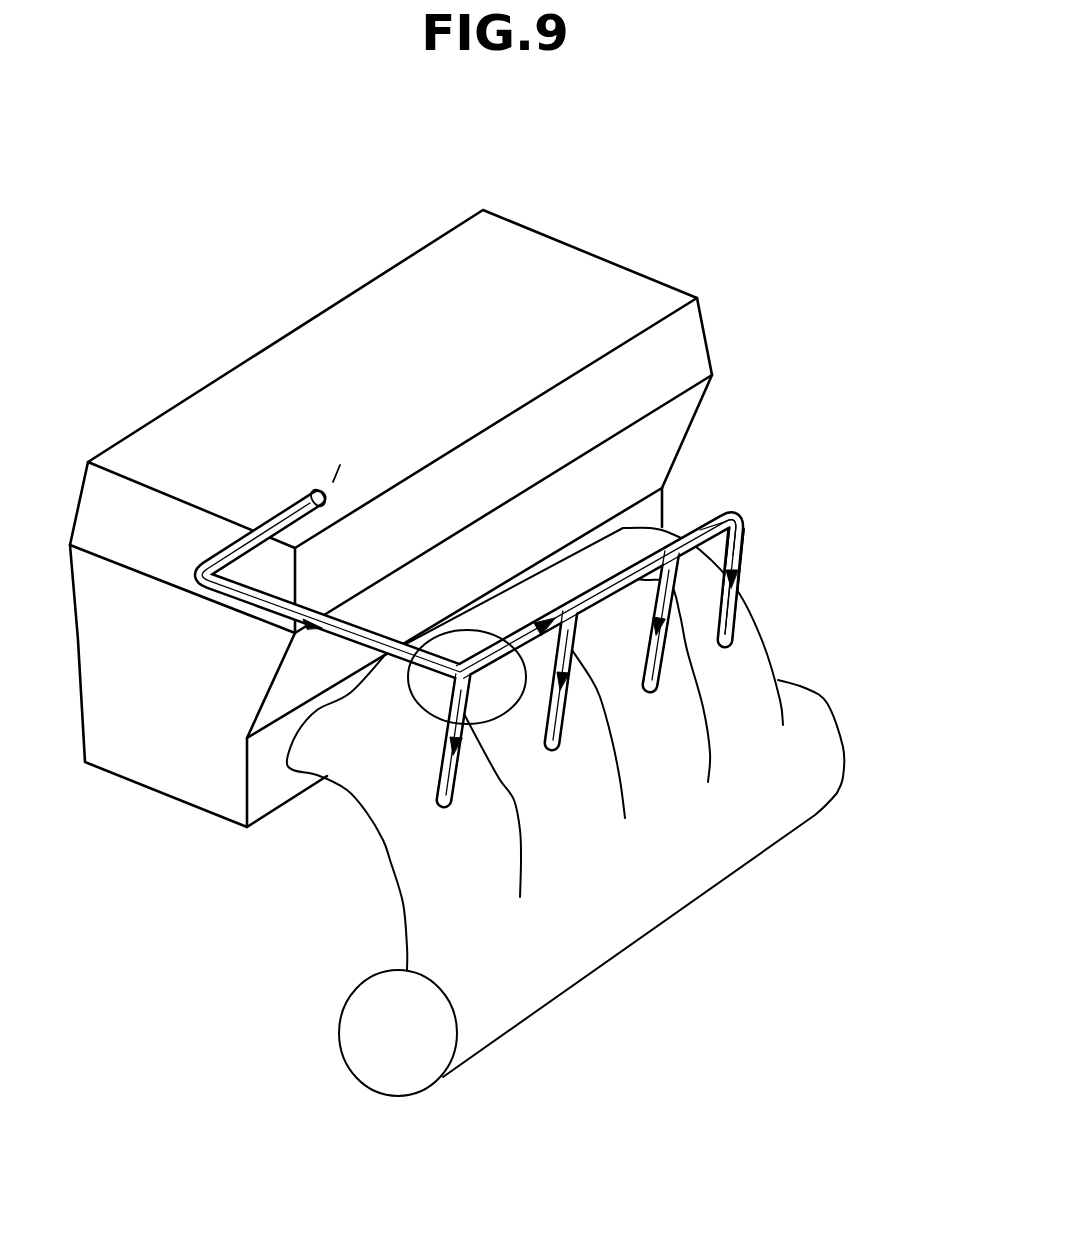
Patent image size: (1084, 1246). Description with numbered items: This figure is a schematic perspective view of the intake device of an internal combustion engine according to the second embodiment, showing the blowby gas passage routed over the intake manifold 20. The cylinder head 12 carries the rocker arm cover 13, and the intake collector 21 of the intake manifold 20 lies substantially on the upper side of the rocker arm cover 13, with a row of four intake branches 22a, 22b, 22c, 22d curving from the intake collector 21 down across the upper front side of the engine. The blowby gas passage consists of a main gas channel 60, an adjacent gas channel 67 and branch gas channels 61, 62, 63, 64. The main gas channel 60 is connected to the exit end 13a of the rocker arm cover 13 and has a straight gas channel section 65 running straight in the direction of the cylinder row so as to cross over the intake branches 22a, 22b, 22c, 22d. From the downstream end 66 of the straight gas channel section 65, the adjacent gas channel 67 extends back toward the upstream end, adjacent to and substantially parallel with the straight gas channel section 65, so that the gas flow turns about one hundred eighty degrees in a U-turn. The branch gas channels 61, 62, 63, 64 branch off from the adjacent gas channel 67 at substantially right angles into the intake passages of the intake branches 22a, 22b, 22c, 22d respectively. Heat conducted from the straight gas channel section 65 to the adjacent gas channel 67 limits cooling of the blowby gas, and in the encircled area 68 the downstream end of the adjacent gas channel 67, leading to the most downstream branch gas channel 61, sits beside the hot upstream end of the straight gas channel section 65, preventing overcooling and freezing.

The cylinder head 12 is at (158, 763).
The rocker arm cover 13 is at (417, 280).
The exit end 13a is at (333, 480).
The intake manifold 20 is at (845, 710).
The intake collector 21 is at (390, 1057).
The intake branch 22a is at (455, 895).
The intake branch 22b is at (522, 792).
The intake branch 22c is at (670, 753).
The intake branch 22d is at (753, 717).
The main gas channel 60 is at (335, 652).
The branch gas channel 61 is at (442, 800).
The branch gas channel 62 is at (556, 757).
The branch gas channel 63 is at (652, 672).
The branch gas channel 64 is at (727, 630).
The straight gas channel section 65 is at (657, 550).
The downstream end 66 is at (747, 512).
The adjacent gas channel 67 is at (720, 582).
The encircled area 68 is at (435, 718).